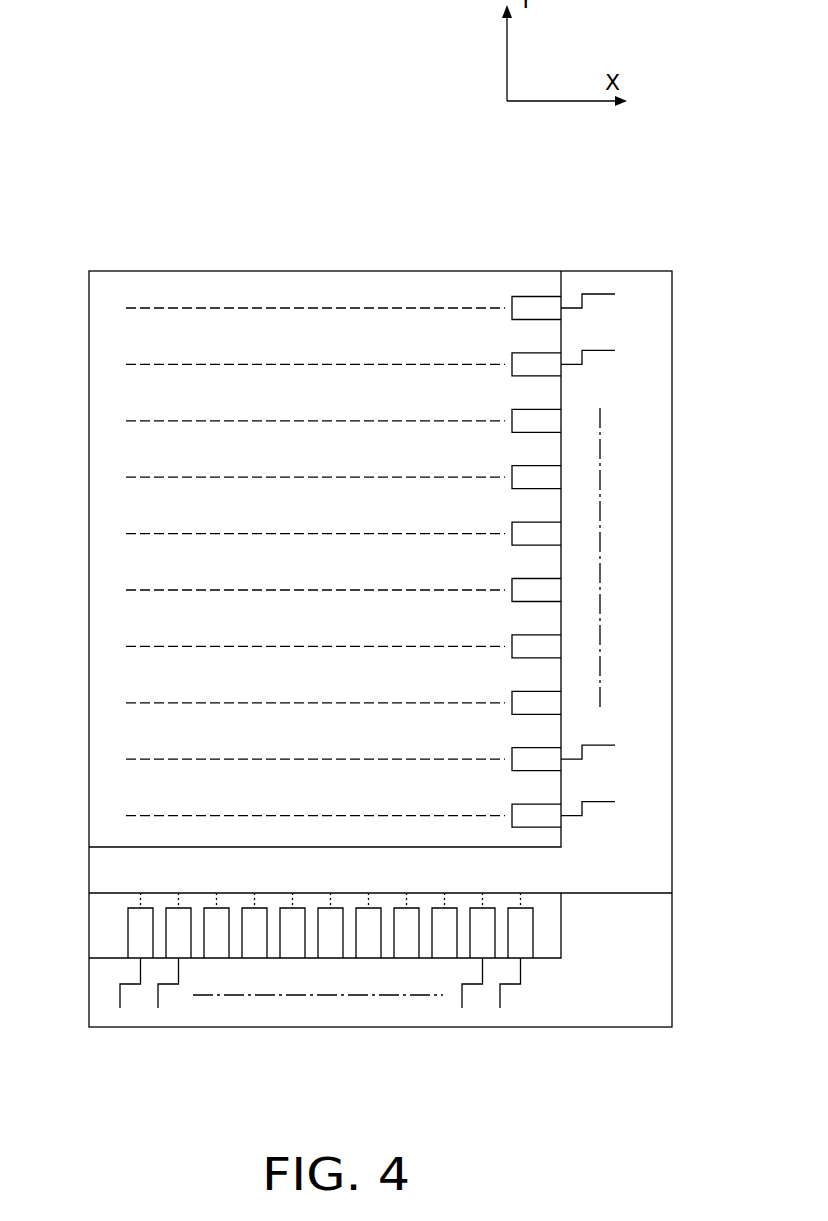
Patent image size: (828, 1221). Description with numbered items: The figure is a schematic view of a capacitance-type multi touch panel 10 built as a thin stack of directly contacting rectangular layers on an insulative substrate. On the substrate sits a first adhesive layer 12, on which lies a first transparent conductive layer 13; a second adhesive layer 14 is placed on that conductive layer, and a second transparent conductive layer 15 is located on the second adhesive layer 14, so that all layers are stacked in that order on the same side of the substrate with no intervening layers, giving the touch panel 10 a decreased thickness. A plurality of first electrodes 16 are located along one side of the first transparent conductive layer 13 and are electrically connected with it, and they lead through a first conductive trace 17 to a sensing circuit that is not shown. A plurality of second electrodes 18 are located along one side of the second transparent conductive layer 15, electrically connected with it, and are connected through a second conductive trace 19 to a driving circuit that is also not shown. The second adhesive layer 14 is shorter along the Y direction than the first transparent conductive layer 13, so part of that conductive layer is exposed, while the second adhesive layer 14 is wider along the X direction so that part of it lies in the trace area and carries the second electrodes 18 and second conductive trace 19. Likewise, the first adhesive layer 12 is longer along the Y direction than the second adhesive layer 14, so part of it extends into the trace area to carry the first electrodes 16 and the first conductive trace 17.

The capacitance-type multi touch panel 10 is at (354, 196).
The first adhesive layer 12 is at (633, 940).
The first transparent conductive layer 13 is at (352, 988).
The second adhesive layer 14 is at (287, 287).
The second transparent conductive layer 15 is at (170, 307).
The first electrodes 16 is at (528, 931).
The first conductive trace 17 is at (503, 997).
The second electrodes 18 is at (533, 308).
The second conductive trace 19 is at (597, 290).